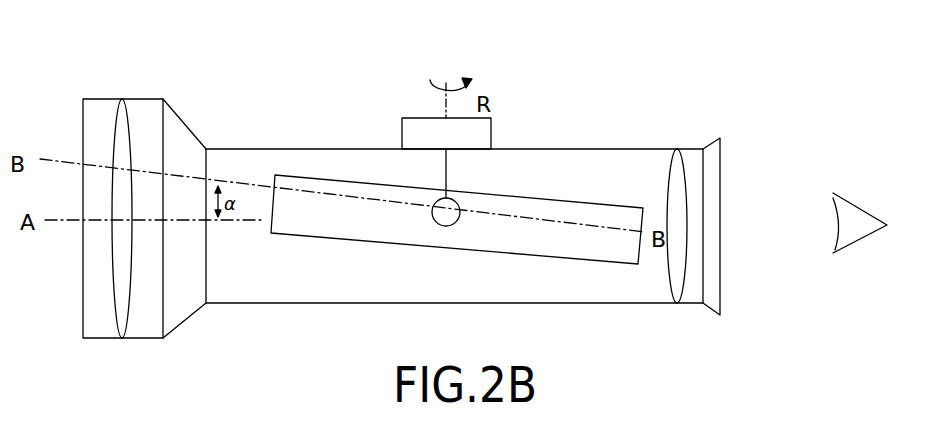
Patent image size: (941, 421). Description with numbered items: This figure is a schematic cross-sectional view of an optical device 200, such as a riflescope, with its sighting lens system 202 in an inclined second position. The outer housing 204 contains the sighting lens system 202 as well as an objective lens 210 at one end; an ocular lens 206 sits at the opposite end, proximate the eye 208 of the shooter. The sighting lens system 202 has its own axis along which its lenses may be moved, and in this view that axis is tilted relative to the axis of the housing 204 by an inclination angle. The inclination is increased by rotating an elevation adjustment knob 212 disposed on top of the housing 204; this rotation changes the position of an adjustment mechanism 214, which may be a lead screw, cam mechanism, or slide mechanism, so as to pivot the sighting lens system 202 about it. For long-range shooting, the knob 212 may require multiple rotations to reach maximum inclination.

The optical device 200 is at (672, 80).
The sighting lens system 202 is at (586, 214).
The outer housing 204 is at (576, 149).
The ocular lens 206 is at (680, 210).
The eye 208 is at (852, 217).
The objective lens 210 is at (118, 160).
The elevation adjustment knob 212 is at (408, 134).
The adjustment mechanism 214 is at (448, 178).